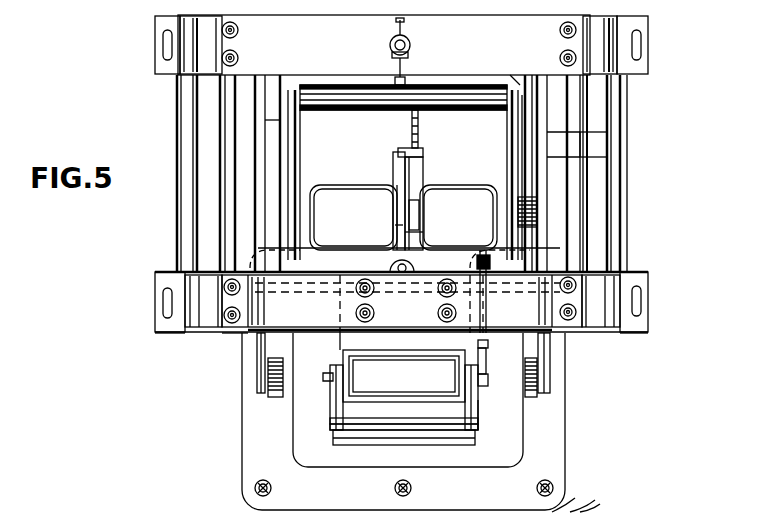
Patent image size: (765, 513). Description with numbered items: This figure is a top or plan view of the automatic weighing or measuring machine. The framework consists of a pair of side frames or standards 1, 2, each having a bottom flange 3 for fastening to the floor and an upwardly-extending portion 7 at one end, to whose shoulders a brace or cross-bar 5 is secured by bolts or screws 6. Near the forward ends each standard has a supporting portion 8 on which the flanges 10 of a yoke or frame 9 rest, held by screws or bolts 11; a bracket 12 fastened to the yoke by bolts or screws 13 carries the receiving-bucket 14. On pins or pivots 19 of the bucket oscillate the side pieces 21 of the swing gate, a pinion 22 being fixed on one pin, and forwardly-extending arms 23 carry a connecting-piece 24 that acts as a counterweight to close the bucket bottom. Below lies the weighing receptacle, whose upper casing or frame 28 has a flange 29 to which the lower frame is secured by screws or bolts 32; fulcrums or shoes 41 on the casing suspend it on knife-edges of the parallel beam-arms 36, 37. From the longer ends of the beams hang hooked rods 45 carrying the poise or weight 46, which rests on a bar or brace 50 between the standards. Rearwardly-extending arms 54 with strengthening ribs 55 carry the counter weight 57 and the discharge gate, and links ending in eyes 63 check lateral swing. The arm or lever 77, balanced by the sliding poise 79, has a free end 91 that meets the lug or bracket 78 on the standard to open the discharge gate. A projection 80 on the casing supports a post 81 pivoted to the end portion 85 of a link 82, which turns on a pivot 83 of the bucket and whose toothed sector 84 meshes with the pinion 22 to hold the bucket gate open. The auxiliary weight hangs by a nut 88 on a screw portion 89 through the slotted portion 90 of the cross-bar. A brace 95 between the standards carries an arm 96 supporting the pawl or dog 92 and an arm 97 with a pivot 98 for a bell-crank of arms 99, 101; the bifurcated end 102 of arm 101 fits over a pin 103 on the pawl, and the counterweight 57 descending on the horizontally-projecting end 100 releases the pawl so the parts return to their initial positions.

The side frame or standard 1 is at (620, 112).
The side frame or standard 2 is at (177, 95).
The laterally-extending flange 3 is at (155, 46).
The brace or cross-bar 5 is at (384, 45).
The bolts or screws 6 is at (238, 36).
The upwardly-extending portion 7 is at (398, 45).
The supporting portion 8 is at (190, 333).
The yoke or frame 9 is at (401, 302).
The flange 10 is at (232, 333).
The screws or bolts 11 is at (230, 280).
The bracket 12 is at (340, 340).
The bolts or screws 13 is at (406, 300).
The receiving-bucket 14 is at (404, 376).
The pins or pivots 19 is at (323, 377).
The side pieces 21 is at (468, 421).
The pinion 22 is at (480, 408).
The forwardly-extending arms 23 is at (333, 406).
The connecting-piece 24 is at (380, 446).
The upper casing or frame 28 is at (293, 440).
The flange 29 is at (332, 252).
The screws or bolts 32 is at (392, 266).
The beam-arm 36 is at (548, 188).
The beam-arm 37 is at (262, 170).
The fulcrums or shoes 41 is at (273, 397).
The link or hooked rod 45 is at (603, 507).
The poise or weight 46 is at (571, 499).
The bar or brace 50 is at (594, 503).
The rearwardly-extending arms 54 is at (294, 138).
The rib 55 is at (296, 158).
The counter weight or balance 57 is at (351, 112).
The eye 63 is at (265, 120).
The arm or lever 77 is at (528, 176).
The lug or bracket 78 is at (577, 144).
The poise or counterweight 79 is at (537, 212).
The projection 80 is at (477, 260).
The post 81 is at (487, 255).
The link 82 is at (488, 344).
The pivot or pin 83 is at (486, 362).
The toothed sector 84 is at (486, 386).
The end portion 85 is at (478, 255).
The nut 88 is at (390, 44).
The screw portion 89 is at (410, 55).
The slotted portion 90 is at (404, 24).
The free end 91 is at (522, 133).
The pivotal pawl or dog 92 is at (397, 228).
The brace or piece 95 is at (314, 210).
The arm 96 is at (402, 233).
The arm 97 is at (395, 160).
The pivot or pin 98 is at (423, 153).
The arm 99 is at (418, 125).
The horizontally-projecting end 100 is at (402, 77).
The arm 101 is at (418, 171).
The bifurcated end 102 is at (426, 226).
The pin 103 is at (418, 205).